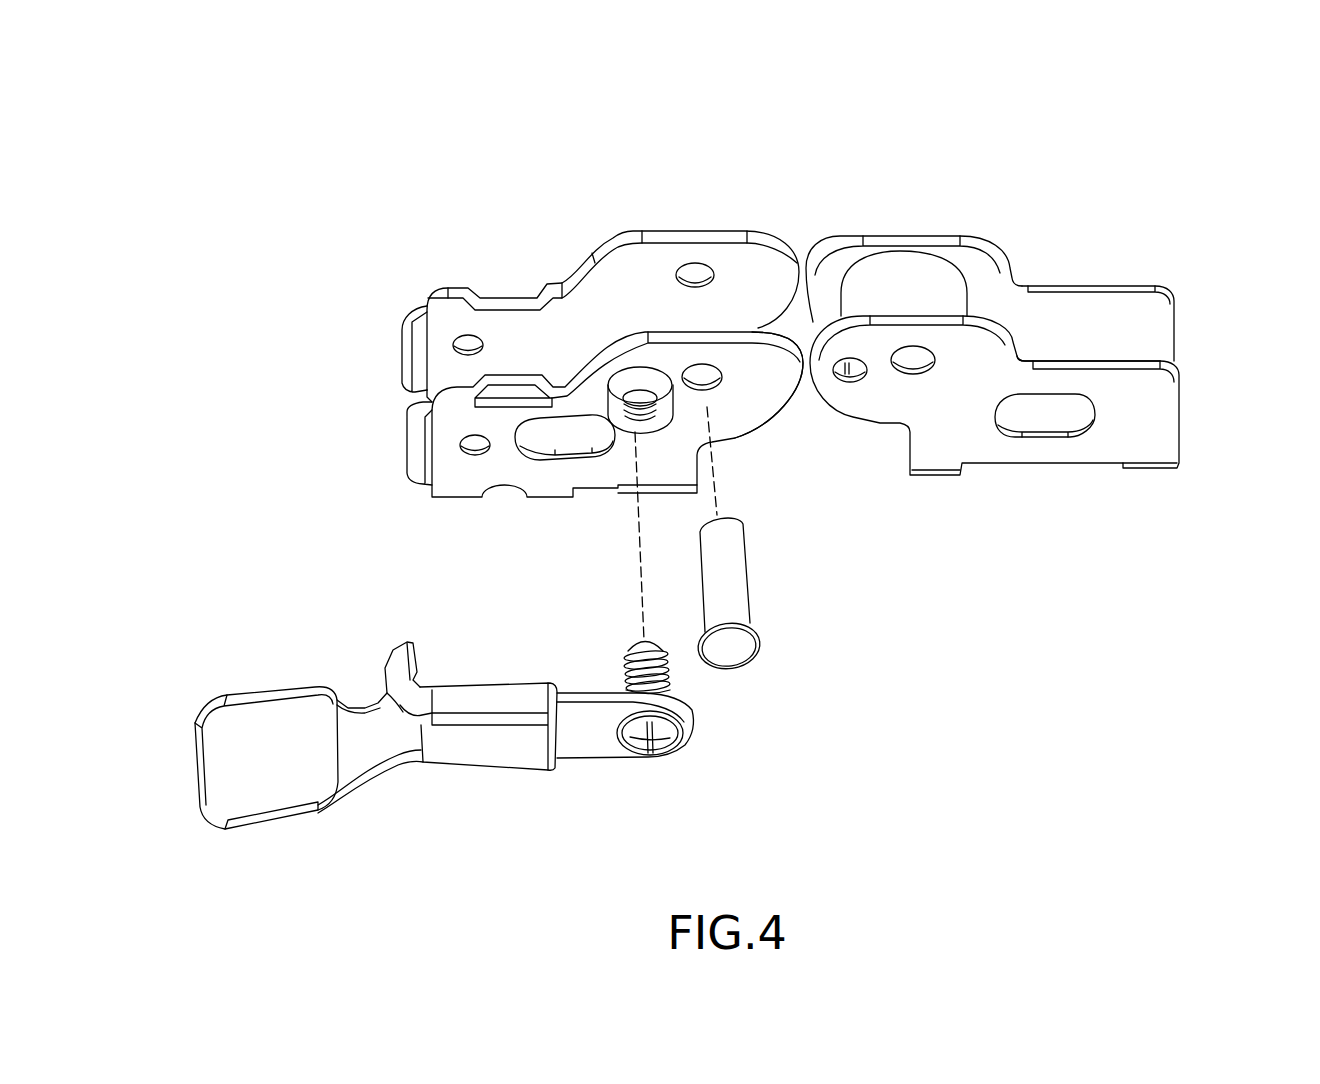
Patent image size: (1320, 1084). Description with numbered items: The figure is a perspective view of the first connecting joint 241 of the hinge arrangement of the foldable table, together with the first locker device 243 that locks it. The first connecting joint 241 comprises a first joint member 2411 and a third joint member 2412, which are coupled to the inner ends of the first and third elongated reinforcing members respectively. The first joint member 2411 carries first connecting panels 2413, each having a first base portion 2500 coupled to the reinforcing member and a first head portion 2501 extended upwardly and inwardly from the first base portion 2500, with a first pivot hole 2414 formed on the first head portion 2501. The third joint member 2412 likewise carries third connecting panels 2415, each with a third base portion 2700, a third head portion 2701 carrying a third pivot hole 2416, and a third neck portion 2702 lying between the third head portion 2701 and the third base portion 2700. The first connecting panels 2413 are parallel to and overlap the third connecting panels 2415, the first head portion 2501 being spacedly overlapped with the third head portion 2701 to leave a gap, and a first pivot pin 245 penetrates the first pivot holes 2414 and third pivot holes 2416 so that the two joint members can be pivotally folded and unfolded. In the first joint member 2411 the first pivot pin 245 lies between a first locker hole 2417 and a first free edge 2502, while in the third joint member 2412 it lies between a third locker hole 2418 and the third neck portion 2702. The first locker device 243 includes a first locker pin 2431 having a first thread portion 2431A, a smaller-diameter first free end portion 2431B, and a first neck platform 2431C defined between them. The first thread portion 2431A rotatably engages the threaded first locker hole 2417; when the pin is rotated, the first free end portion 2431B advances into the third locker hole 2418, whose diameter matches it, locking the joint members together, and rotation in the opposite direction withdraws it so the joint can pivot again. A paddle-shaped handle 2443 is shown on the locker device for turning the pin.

The first connecting joint 241 is at (725, 184).
The first joint member 2411 is at (508, 265).
The third joint member 2412 is at (1097, 250).
The first connecting panel 2413 is at (645, 275).
The first pivot hole 2414 is at (722, 385).
The third connecting panel 2415 is at (1108, 318).
The third pivot hole 2416 is at (933, 382).
The first locker hole 2417 is at (625, 427).
The third locker hole 2418 is at (842, 387).
The first base portion 2500 is at (452, 478).
The first head portion 2501 is at (750, 370).
The first free edge 2502 is at (798, 340).
The third base portion 2700 is at (1177, 468).
The third head portion 2701 is at (943, 343).
The third neck portion 2702 is at (990, 387).
The first locker device 243 is at (740, 760).
The first locker pin 2431 is at (670, 672).
The first thread portion 2431A is at (622, 678).
The first free end portion 2431B is at (665, 608).
The first neck platform 2431C is at (633, 651).
The pressing paddle 2443 is at (267, 740).
The first pivot pin 245 is at (732, 587).